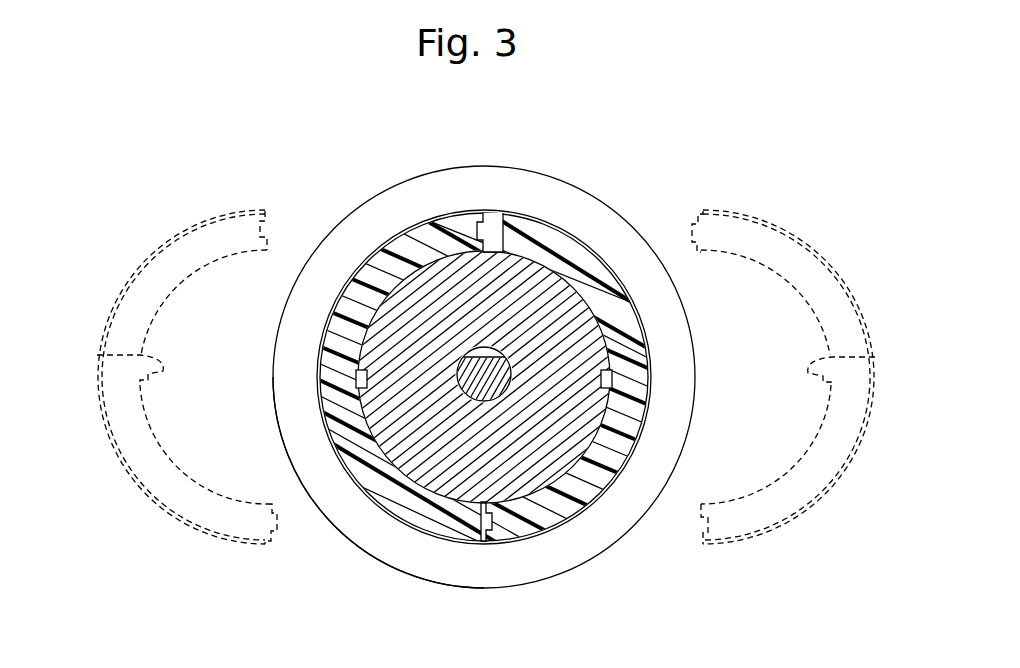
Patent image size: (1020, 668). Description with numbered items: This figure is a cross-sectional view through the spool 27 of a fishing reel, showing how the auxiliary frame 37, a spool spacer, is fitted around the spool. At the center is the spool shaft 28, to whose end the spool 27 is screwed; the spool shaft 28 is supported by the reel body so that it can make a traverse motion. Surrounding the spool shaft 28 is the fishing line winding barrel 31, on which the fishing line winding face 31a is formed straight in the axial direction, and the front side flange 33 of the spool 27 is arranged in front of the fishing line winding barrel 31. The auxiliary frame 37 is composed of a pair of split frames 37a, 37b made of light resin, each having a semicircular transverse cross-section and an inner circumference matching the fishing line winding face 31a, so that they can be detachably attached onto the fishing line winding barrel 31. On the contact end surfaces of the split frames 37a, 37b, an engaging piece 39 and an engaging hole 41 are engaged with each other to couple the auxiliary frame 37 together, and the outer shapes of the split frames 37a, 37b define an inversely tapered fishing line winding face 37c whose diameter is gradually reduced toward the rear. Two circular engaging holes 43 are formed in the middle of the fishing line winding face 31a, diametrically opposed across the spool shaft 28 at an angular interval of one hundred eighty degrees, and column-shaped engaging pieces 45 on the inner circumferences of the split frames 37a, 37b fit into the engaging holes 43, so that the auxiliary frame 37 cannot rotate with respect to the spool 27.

The spool 27 is at (592, 194).
The spool shaft 28 is at (486, 397).
The fishing line winding barrel 31 is at (428, 266).
The fishing line winding face 31a is at (502, 250).
The front side flange 33 is at (407, 557).
The auxiliary frame (spool spacer) 37 is at (545, 536).
The split frame 37a is at (342, 326).
The split frame 37b is at (626, 326).
The inversely tapered fishing line winding face 37c is at (468, 212).
The engaging piece 39 is at (697, 222).
The engaging hole 41 is at (263, 222).
The engaging hole 43 is at (356, 381).
The engaging piece 45 is at (97, 357).